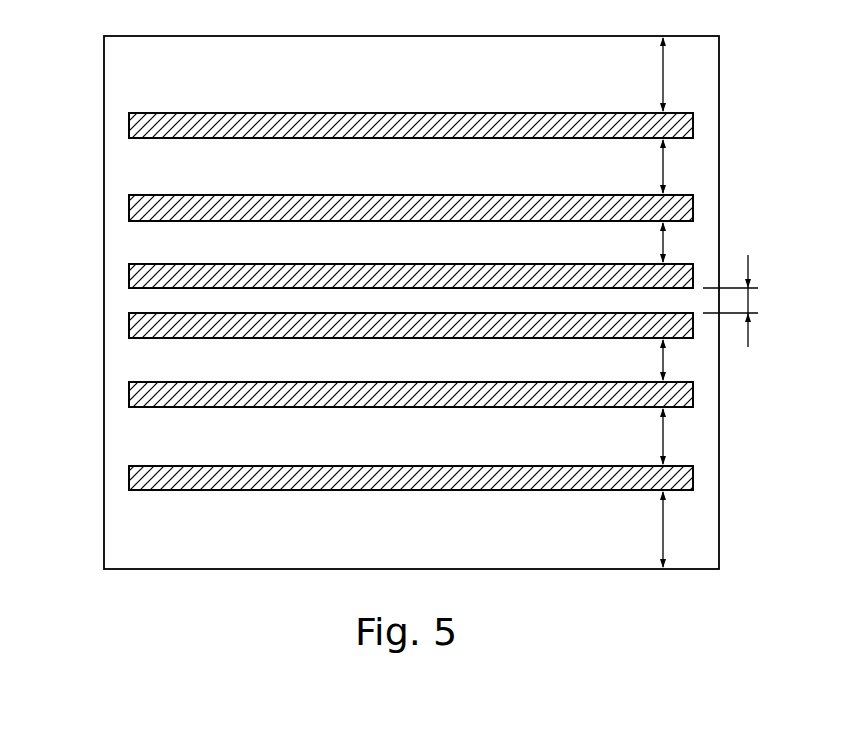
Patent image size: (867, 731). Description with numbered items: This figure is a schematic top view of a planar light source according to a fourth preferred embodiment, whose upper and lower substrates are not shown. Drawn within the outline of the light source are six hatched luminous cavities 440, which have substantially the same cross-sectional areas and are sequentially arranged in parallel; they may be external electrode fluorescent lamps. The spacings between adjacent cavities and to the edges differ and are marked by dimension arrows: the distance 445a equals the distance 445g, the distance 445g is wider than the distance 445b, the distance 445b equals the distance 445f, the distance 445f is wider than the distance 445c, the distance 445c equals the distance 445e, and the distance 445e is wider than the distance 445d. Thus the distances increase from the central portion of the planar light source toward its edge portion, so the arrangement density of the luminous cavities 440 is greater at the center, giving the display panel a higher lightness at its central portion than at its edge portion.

The luminous cavities 440 is at (129, 131).
The distance 445a is at (663, 73).
The distance 445b is at (663, 167).
The distance 445c is at (663, 243).
The distance 445d is at (748, 303).
The distance 445e is at (663, 360).
The distance 445f is at (663, 441).
The distance 445g is at (663, 530).